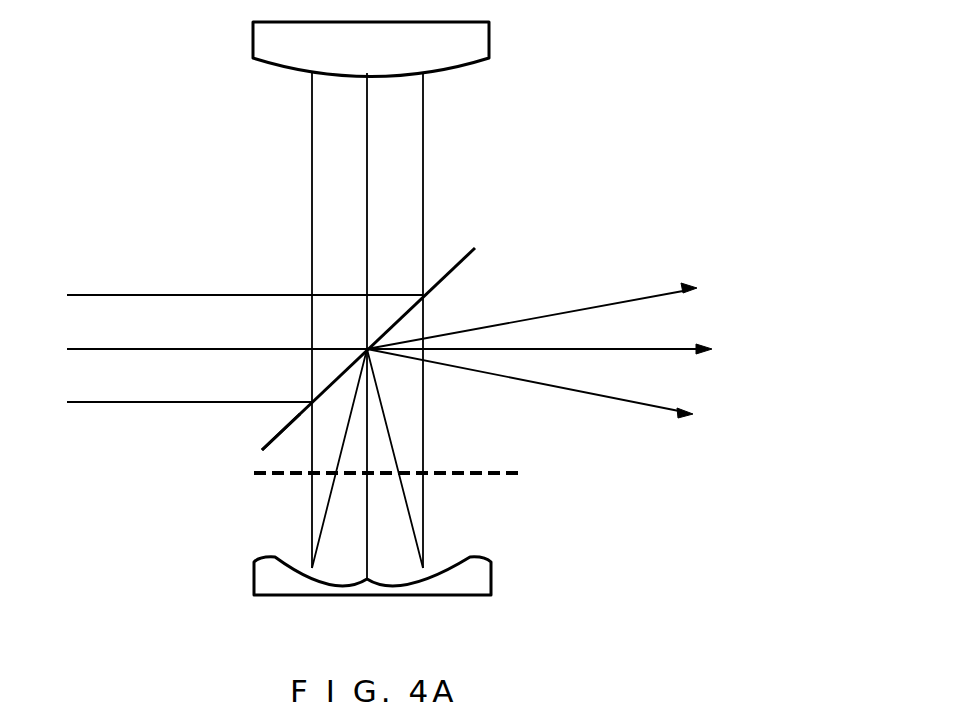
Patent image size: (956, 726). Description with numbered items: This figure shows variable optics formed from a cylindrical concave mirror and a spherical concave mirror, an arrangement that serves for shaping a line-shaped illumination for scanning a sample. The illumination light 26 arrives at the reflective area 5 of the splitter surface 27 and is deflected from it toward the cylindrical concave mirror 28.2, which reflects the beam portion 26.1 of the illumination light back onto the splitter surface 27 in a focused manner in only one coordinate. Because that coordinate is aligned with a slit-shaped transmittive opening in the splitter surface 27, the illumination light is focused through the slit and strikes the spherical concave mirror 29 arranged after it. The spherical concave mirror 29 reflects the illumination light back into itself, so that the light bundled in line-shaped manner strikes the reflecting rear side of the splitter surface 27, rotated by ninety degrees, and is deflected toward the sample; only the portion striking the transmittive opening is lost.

The second concave mirror 28.2 is at (489, 43).
The spherical concave mirror 29 is at (491, 572).
The beam portion 26.1 is at (335, 160).
The illumination light 26 is at (211, 316).
The splitter surface 27 is at (470, 257).
The reflective area 5 is at (278, 436).